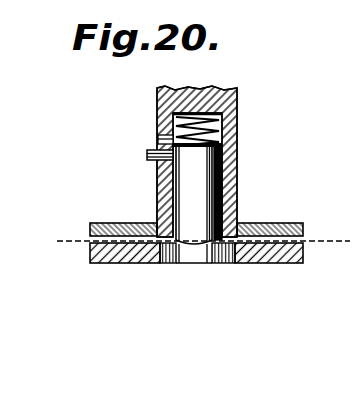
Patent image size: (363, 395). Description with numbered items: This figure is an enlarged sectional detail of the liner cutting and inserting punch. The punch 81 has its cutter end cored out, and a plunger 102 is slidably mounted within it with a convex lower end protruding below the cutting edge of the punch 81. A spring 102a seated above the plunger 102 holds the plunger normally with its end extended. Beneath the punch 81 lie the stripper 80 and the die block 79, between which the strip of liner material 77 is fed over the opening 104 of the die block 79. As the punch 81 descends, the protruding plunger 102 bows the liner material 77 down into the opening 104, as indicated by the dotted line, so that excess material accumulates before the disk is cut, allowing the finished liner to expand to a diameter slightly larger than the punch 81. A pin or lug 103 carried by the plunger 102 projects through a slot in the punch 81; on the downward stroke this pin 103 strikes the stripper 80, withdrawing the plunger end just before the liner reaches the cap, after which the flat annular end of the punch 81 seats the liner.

The punch 81 is at (222, 128).
The plunger 102 is at (229, 220).
The spring 102a is at (174, 116).
The pin or lug 103 is at (137, 175).
The stripper 80 is at (303, 230).
The strip of liner material 77 is at (70, 241).
The die block 79 is at (303, 258).
The opening of die block 104 is at (222, 258).